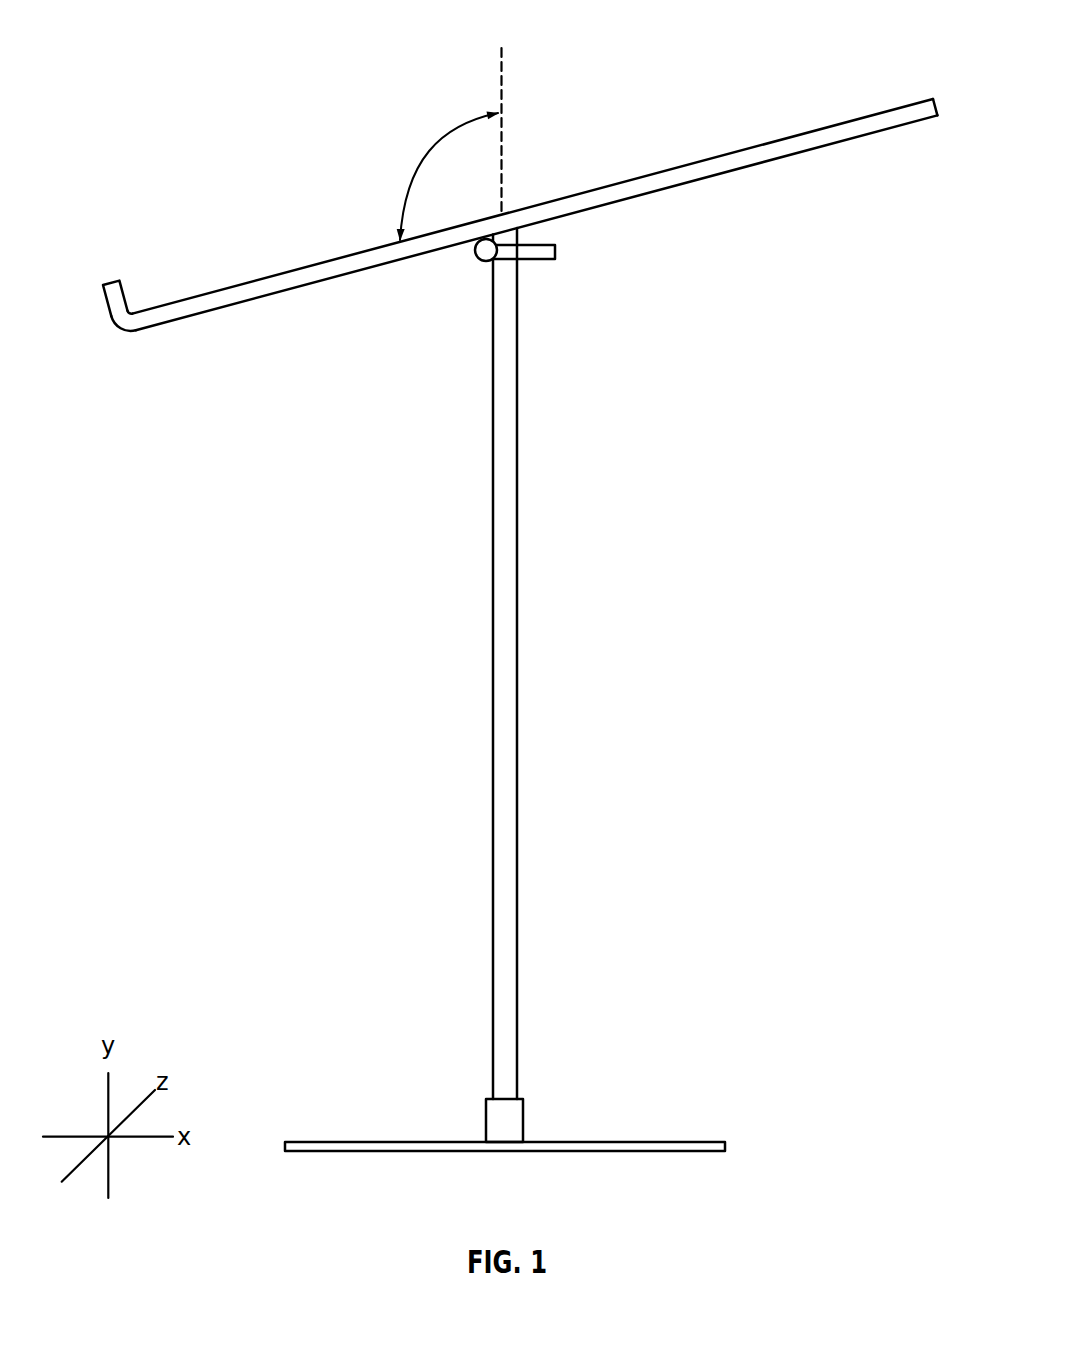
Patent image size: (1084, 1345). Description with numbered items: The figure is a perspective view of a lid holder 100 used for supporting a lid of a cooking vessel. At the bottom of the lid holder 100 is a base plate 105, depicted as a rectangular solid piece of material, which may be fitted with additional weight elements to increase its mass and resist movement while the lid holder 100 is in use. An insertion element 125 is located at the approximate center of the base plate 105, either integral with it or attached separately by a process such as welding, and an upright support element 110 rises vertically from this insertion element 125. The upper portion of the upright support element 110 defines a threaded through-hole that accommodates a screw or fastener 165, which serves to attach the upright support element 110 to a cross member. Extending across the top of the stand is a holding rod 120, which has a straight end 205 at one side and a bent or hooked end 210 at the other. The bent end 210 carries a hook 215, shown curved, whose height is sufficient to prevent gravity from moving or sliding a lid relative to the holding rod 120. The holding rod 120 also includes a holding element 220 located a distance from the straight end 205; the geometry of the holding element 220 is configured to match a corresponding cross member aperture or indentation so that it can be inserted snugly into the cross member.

The lid holder 100 is at (234, 41).
The base plate 105 is at (703, 1141).
The upright support element 110 is at (505, 750).
The holding rod 120 is at (718, 155).
The insertion element 125 is at (505, 1124).
The screw or fastener 165 is at (555, 252).
The straight end 205 is at (907, 127).
The bent or hooked end 210 is at (123, 331).
The hook 215 is at (103, 305).
The holding element 220 is at (427, 148).